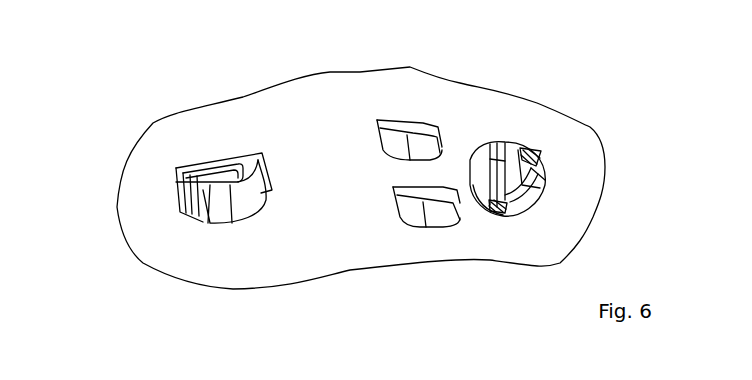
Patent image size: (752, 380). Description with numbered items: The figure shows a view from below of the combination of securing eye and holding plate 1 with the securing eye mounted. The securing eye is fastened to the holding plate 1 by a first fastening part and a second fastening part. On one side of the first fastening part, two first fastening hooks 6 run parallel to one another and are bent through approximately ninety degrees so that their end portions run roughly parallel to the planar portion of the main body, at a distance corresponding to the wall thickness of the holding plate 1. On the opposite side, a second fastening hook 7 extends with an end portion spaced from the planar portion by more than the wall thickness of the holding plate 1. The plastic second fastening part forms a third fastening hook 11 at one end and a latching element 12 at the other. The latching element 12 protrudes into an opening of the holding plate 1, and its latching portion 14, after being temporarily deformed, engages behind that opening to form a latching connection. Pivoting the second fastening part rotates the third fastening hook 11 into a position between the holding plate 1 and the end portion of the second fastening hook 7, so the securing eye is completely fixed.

The holding plate 1 is at (305, 114).
The first fastening hooks 6 is at (420, 147).
The second fastening hook 7 is at (222, 205).
The third fastening hook 11 is at (201, 165).
The latching element 12 is at (497, 212).
The latching portion 14 is at (532, 152).